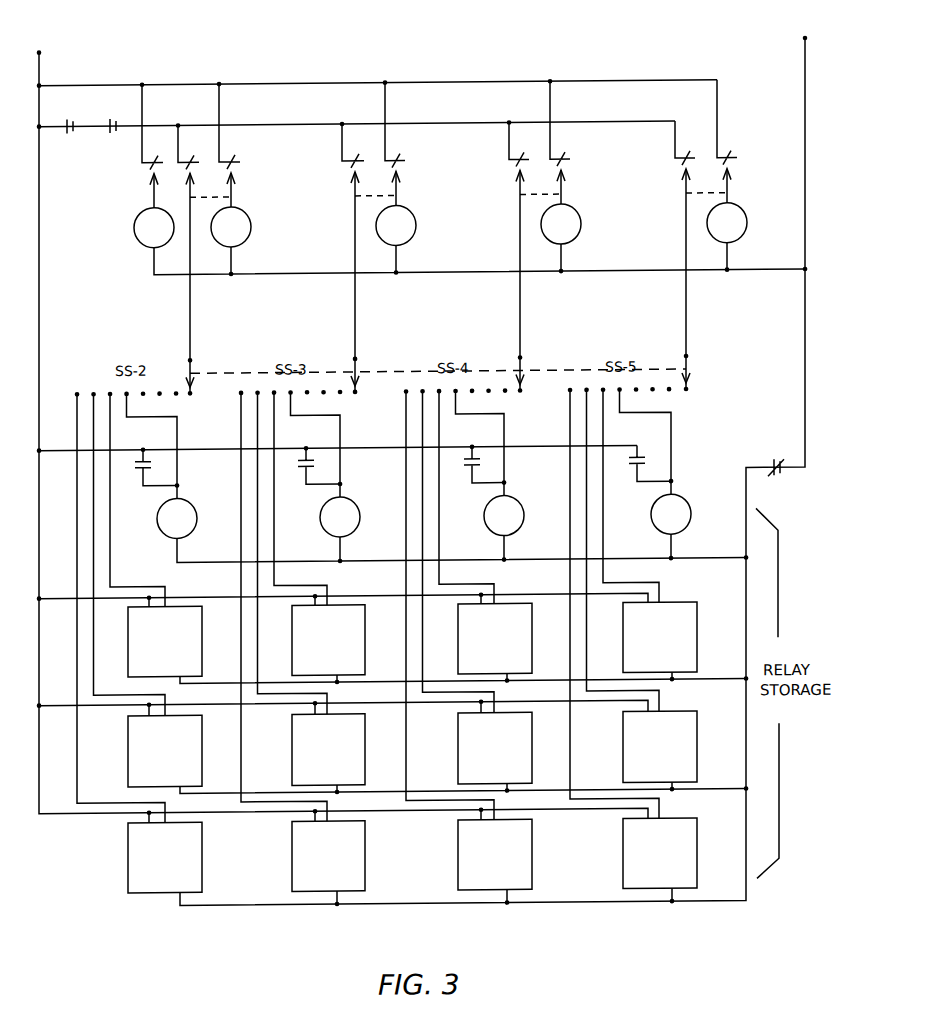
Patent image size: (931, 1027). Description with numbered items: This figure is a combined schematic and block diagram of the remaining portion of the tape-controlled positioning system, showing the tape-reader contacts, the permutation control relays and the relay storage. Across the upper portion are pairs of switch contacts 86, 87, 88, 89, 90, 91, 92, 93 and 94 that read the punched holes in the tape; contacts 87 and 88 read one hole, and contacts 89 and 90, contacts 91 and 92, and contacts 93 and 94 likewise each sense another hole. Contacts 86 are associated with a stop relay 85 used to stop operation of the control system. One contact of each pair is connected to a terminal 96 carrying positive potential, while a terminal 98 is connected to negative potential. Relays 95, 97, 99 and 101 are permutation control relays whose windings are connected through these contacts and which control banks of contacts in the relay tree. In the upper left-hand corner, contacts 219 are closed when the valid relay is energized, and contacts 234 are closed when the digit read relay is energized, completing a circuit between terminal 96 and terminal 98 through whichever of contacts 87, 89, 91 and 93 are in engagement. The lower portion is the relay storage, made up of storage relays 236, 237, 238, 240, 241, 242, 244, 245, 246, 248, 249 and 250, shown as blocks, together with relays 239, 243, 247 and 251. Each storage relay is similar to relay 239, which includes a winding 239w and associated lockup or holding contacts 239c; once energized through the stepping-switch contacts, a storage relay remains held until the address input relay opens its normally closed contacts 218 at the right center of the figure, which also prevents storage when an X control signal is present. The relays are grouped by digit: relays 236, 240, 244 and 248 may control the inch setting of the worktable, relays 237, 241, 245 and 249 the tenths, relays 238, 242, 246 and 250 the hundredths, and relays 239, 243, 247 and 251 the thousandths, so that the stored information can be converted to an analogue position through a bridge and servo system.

The terminal 96 is at (41, 54).
The terminal 98 is at (803, 46).
The contacts 219 is at (70, 116).
The contacts 234 is at (113, 116).
The switch contacts 86 is at (156, 135).
The switch contacts 87 is at (192, 154).
The switch contacts 88 is at (234, 134).
The switch contacts 89 is at (358, 153).
The switch contacts 90 is at (401, 132).
The switch contacts 91 is at (524, 151).
The switch contacts 92 is at (566, 131).
The switch contacts 93 is at (691, 150).
The switch contacts 94 is at (736, 129).
The stop relay 85 is at (134, 229).
The permutation control relay 95 is at (252, 223).
The permutation control relay 97 is at (417, 221).
The permutation control relay 99 is at (582, 221).
The permutation control relay 101 is at (747, 224).
The normally closed contacts 218 is at (773, 466).
The storage relay 239 is at (195, 522).
The lockup or holding contacts 239c is at (138, 472).
The winding 239w is at (183, 540).
The storage relay 243 is at (347, 492).
The storage relay 247 is at (512, 492).
The storage relay 251 is at (680, 492).
The storage relay 236 is at (202, 870).
The storage relay 237 is at (202, 763).
The storage relay 238 is at (202, 665).
The storage relay 240 is at (365, 871).
The storage relay 241 is at (365, 761).
The storage relay 242 is at (365, 657).
The storage relay 244 is at (532, 873).
The storage relay 245 is at (532, 763).
The storage relay 246 is at (532, 657).
The storage relay 248 is at (697, 867).
The storage relay 249 is at (697, 759).
The storage relay 250 is at (697, 650).